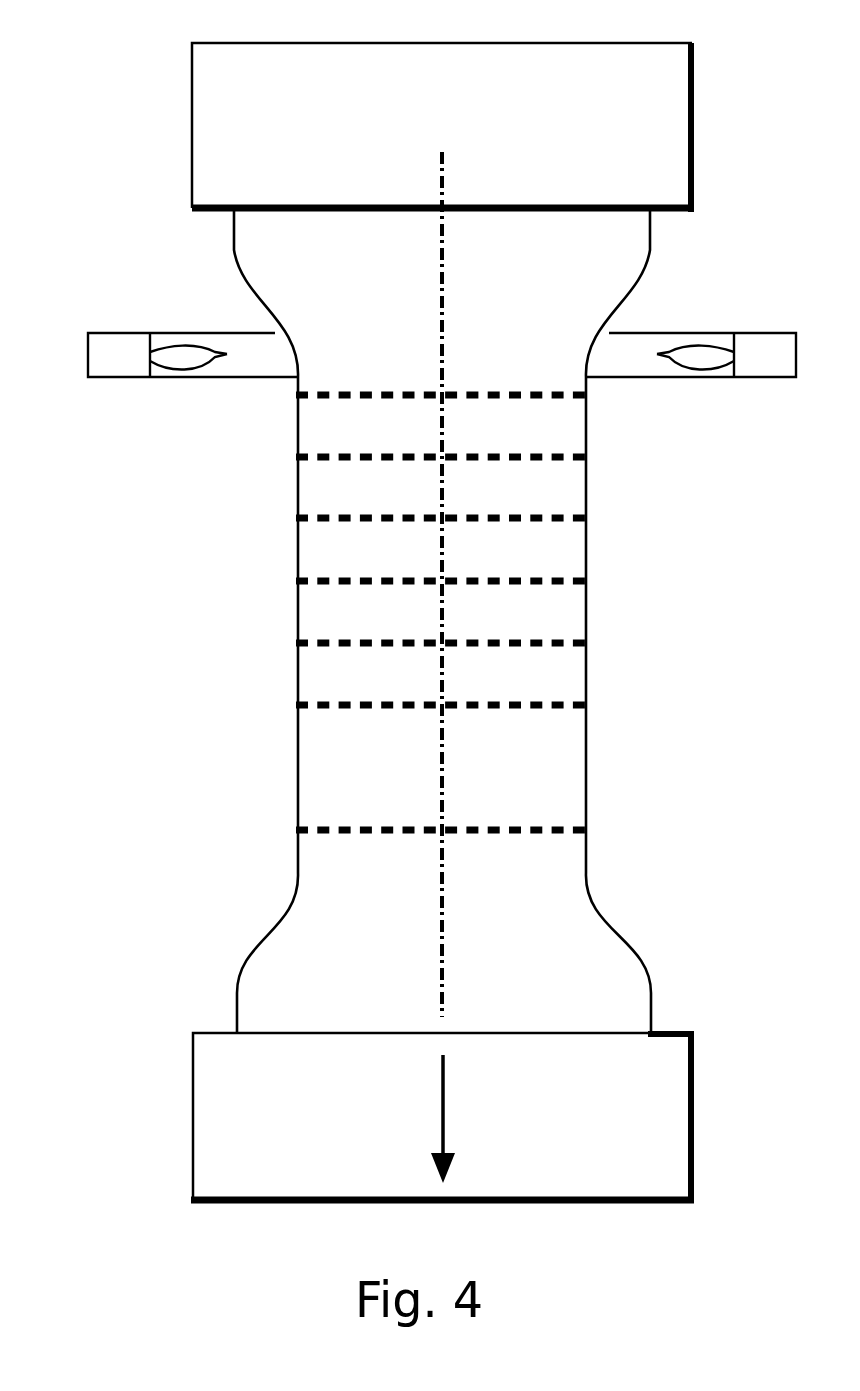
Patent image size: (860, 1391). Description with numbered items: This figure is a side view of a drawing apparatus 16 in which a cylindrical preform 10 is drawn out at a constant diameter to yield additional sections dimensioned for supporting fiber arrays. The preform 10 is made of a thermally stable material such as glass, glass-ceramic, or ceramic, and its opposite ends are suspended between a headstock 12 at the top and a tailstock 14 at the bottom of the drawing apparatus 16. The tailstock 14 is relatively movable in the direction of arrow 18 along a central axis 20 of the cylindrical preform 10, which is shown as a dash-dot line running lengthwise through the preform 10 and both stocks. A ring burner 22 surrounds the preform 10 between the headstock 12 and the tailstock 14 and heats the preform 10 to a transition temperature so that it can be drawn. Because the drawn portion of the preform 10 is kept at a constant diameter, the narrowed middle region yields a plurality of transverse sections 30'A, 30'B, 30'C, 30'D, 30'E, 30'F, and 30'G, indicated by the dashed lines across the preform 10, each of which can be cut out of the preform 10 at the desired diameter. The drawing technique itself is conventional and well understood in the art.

The cylindrical preform 10 is at (358, 964).
The headstock 12 is at (563, 114).
The tailstock 14 is at (586, 1107).
The drawing apparatus 16 is at (158, 116).
The arrow 18 is at (447, 1097).
The central axis 20 is at (437, 295).
The ring burner 22 is at (177, 333).
The transverse section 30'A is at (359, 413).
The transverse section 30'B is at (359, 477).
The transverse section 30'C is at (359, 536).
The transverse section 30'D is at (359, 598).
The transverse section 30'E is at (359, 671).
The transverse section 30'F is at (359, 732).
The transverse section 30'G is at (359, 809).